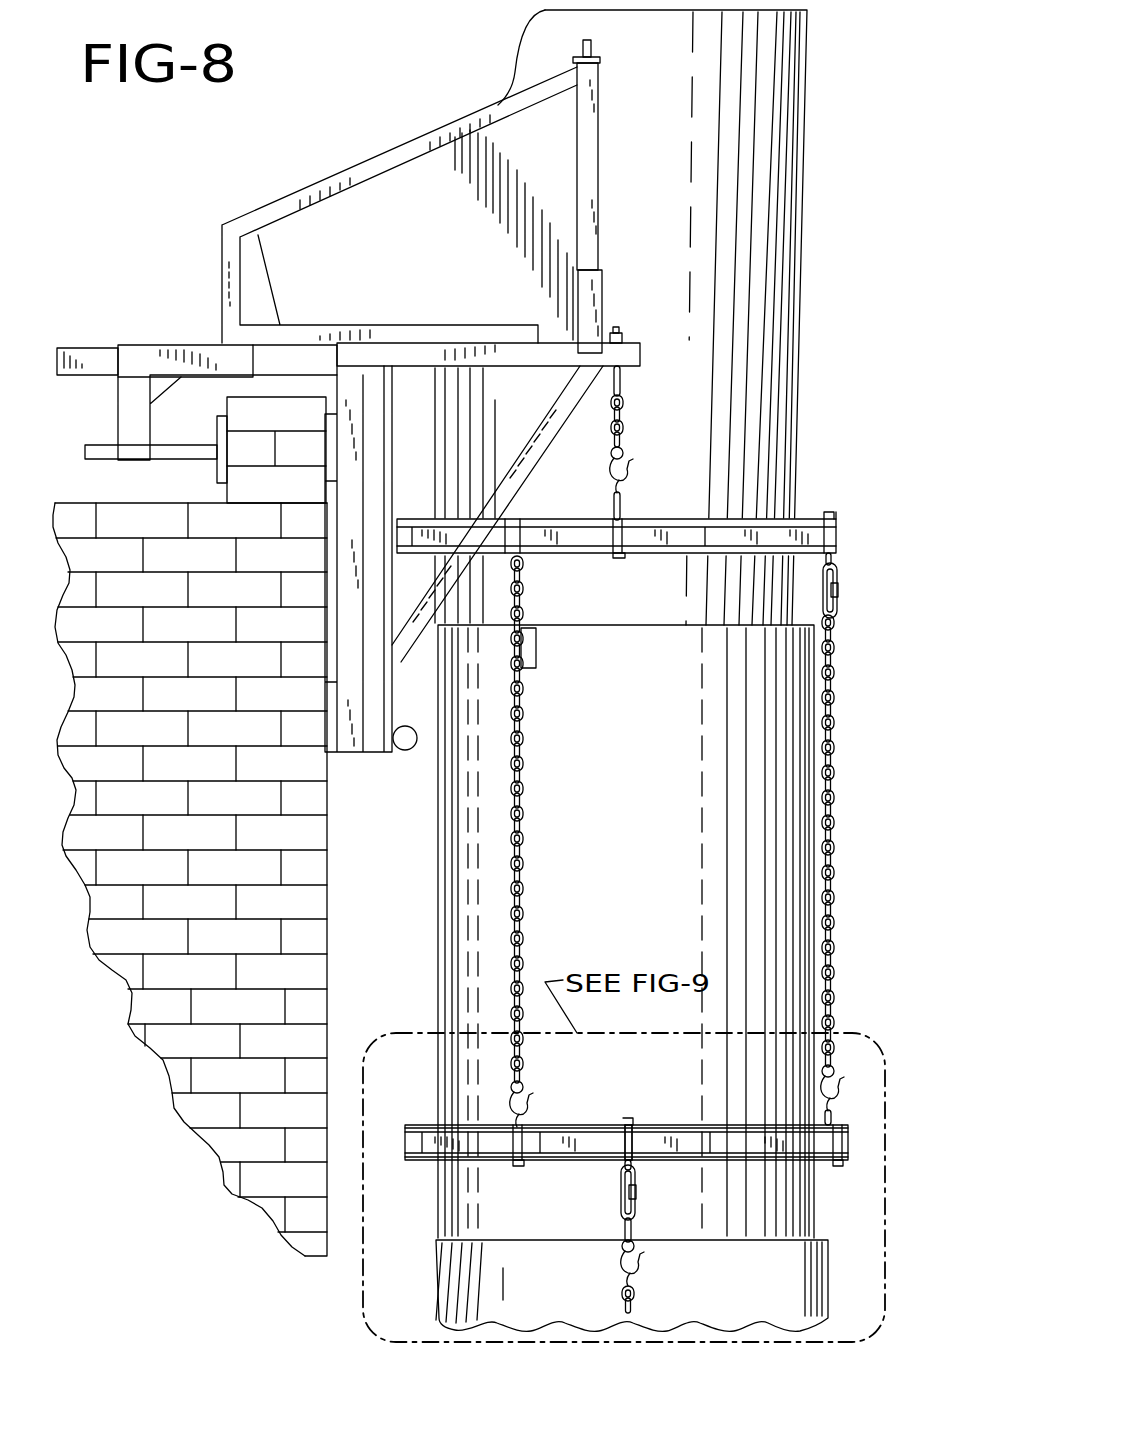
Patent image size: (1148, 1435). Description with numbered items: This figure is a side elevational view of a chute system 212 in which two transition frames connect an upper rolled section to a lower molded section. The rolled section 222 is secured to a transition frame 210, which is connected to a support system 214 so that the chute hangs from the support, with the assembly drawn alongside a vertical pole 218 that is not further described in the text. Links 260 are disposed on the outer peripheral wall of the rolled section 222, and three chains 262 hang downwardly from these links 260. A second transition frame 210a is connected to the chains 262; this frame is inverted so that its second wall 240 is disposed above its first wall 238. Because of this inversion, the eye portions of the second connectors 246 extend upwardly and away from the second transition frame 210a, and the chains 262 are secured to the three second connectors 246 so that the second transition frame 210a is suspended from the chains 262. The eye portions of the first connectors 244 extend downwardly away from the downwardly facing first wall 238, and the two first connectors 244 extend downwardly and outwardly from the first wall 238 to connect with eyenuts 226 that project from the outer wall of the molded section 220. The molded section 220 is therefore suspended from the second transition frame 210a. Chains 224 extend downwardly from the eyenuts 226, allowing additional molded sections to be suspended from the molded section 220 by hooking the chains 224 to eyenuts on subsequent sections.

The transition frame 210 is at (805, 516).
The second transition frame 210a is at (792, 1158).
The chute system 212 is at (812, 429).
The support system 214 is at (630, 340).
The pole 218 is at (800, 332).
The molded section 220 is at (832, 1269).
The rolled section 222 is at (450, 901).
The chains 224 is at (642, 1294).
The eyenuts 226 is at (620, 1288).
The first wall 238 is at (578, 1162).
The second wall 240 is at (607, 1127).
The first connectors 244 is at (632, 1144).
The second connectors 246 is at (528, 1119).
The links 260 is at (826, 641).
The chains 262 is at (840, 727).